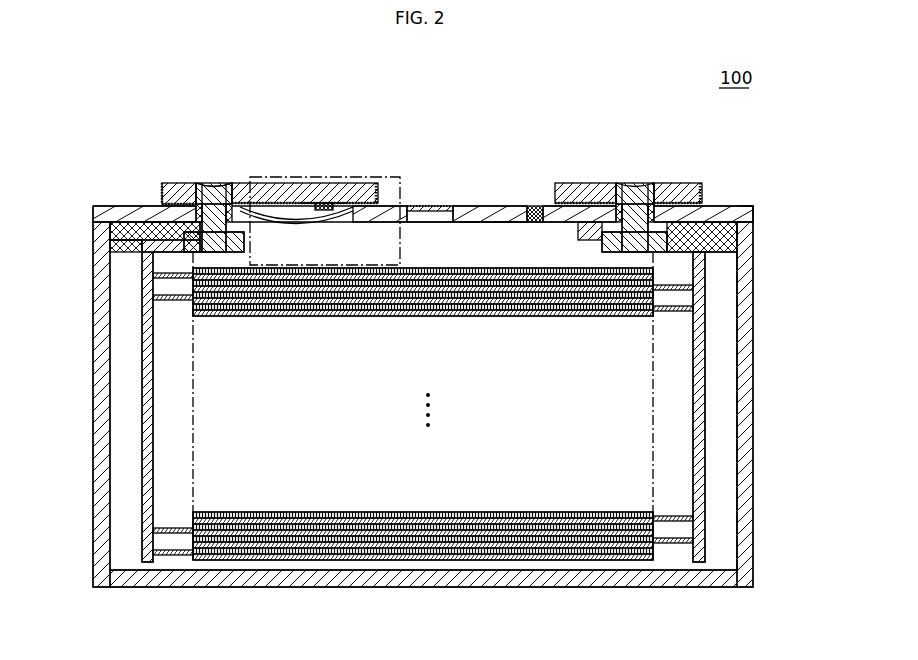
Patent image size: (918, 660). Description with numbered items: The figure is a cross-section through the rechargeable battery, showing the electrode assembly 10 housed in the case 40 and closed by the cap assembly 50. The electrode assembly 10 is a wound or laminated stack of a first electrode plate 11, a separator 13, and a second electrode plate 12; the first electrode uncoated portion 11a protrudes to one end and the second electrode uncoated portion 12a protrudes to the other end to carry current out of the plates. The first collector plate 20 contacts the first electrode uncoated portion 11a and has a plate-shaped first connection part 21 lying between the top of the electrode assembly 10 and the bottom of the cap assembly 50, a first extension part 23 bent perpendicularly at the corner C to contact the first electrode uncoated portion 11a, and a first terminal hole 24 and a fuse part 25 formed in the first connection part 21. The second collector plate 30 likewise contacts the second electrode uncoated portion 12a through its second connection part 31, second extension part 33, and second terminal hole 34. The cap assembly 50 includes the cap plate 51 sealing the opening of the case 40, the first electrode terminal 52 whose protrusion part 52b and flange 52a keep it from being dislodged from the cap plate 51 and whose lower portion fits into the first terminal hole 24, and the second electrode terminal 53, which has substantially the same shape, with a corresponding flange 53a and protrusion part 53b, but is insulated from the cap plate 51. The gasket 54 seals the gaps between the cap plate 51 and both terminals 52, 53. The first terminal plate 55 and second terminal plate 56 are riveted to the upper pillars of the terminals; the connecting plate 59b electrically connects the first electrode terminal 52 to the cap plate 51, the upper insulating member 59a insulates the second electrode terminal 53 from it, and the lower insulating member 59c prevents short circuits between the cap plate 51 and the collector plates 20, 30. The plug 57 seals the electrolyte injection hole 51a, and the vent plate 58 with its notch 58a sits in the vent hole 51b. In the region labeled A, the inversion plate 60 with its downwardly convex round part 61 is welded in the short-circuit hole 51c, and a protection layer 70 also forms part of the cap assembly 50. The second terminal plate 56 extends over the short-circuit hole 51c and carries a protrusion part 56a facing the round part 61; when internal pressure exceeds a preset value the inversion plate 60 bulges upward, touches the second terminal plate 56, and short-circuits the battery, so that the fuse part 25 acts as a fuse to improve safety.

The electrode assembly 10 is at (510, 572).
The first electrode plate 11 is at (580, 562).
The first electrode uncoated portion 11a is at (673, 543).
The second electrode plate 12 is at (300, 562).
The second electrode uncoated portion 12a is at (172, 555).
The separator 13 is at (442, 562).
The first collector plate 20 is at (708, 352).
The first connection part 21 is at (660, 238).
The first extension part 23 is at (705, 420).
The first terminal hole 24 is at (700, 260).
The fuse part 25 is at (705, 248).
The second collector plate 30 is at (140, 352).
The second connection part 31 is at (165, 232).
The second extension part 33 is at (148, 420).
The second terminal hole 34 is at (150, 248).
The case 40 is at (745, 320).
The cap assembly 50 is at (485, 128).
The cap plate 51 is at (490, 206).
The electrolyte injection hole 51a is at (500, 224).
The vent hole 51b is at (432, 222).
The short-circuit hole 51c is at (300, 222).
The first electrode terminal 52 is at (632, 187).
The flange 52a is at (590, 240).
The protrusion part 52b is at (650, 190).
The second electrode terminal 53 is at (218, 186).
The terminal flange 53a is at (232, 244).
The terminal head 53b is at (206, 184).
The gasket 54 is at (170, 190).
The first terminal plate 55 is at (580, 183).
The second terminal plate 56 is at (280, 183).
The protrusion part 56a is at (320, 200).
The plug 57 is at (535, 206).
The vent plate 58 is at (438, 207).
The notch 58a is at (420, 205).
The upper insulating member 59a is at (373, 190).
The connecting plate 59b is at (700, 195).
The lower insulating member 59c is at (112, 232).
The inversion plate 60 is at (322, 203).
The round part 61 is at (715, 235).
The protection layer 70 is at (335, 222).
The detail region A is at (262, 176).
The corner C is at (740, 213).